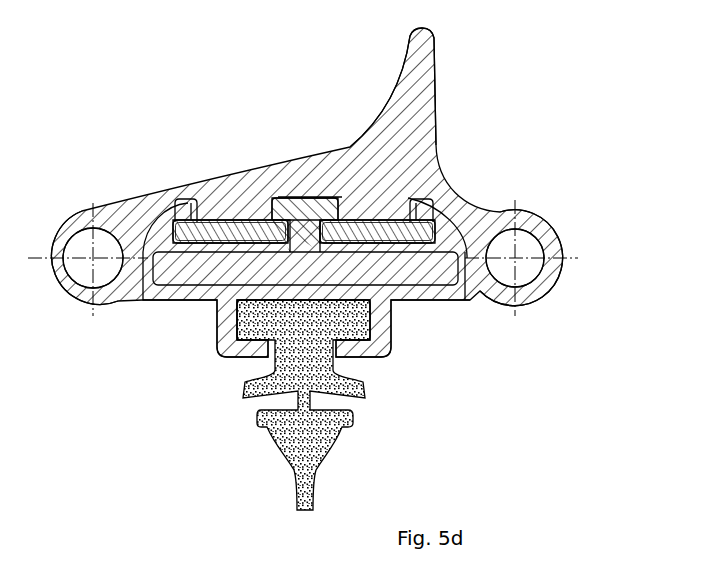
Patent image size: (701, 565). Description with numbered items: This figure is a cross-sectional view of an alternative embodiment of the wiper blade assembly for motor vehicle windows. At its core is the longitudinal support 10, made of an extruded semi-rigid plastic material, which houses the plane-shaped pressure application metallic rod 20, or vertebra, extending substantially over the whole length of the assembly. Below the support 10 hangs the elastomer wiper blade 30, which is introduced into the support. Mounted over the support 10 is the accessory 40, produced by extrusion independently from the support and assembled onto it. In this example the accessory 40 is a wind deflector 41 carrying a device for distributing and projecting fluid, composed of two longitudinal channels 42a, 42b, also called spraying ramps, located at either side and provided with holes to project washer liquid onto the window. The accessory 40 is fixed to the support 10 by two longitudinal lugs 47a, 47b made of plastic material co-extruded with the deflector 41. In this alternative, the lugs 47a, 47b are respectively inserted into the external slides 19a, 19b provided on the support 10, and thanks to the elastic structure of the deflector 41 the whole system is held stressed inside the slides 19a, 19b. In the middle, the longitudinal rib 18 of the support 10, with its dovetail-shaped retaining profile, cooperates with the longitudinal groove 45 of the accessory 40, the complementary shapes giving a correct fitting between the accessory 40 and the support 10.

The longitudinal support 10 is at (183, 302).
The longitudinal rib 18 is at (294, 198).
The external slide 19a is at (178, 203).
The external slide 19b is at (433, 207).
The pressure application metallic rod 20 is at (426, 284).
The elastomer wiper blade 30 is at (327, 453).
The accessory 40 is at (396, 69).
The wind deflector 41 is at (437, 62).
The longitudinal channel 42a is at (72, 216).
The longitudinal channel 42b is at (555, 226).
The longitudinal groove 45 is at (343, 194).
The longitudinal lug 47a is at (232, 221).
The longitudinal lug 47b is at (425, 230).